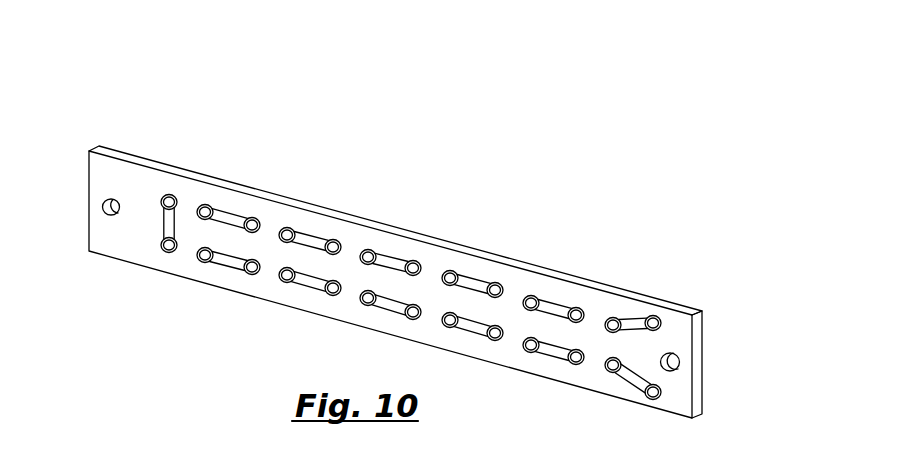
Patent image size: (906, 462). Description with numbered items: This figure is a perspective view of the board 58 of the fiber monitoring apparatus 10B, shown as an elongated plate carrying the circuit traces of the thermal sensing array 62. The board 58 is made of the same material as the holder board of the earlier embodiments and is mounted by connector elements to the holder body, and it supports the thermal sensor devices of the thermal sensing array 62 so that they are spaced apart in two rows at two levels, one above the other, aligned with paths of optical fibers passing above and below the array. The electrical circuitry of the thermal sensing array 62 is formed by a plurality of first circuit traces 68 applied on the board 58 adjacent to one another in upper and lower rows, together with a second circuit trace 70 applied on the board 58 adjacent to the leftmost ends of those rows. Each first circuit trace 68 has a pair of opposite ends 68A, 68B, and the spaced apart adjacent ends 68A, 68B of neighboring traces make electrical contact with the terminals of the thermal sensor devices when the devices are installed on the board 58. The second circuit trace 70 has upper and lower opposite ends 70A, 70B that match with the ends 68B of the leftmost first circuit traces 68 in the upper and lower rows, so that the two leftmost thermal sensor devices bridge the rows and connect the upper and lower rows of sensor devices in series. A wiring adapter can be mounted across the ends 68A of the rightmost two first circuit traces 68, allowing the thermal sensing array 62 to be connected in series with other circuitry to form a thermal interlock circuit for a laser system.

The fiber monitoring apparatus 10B is at (451, 282).
The board 58 is at (451, 282).
The thermal sensing array 62 is at (713, 368).
The first circuit traces 68 is at (389, 253).
The end of first circuit trace 68A is at (255, 217).
The end of first circuit trace 68B is at (202, 204).
The second circuit trace 70 is at (116, 201).
The upper end of second circuit trace 70A is at (167, 194).
The lower end of second circuit trace 70B is at (163, 249).